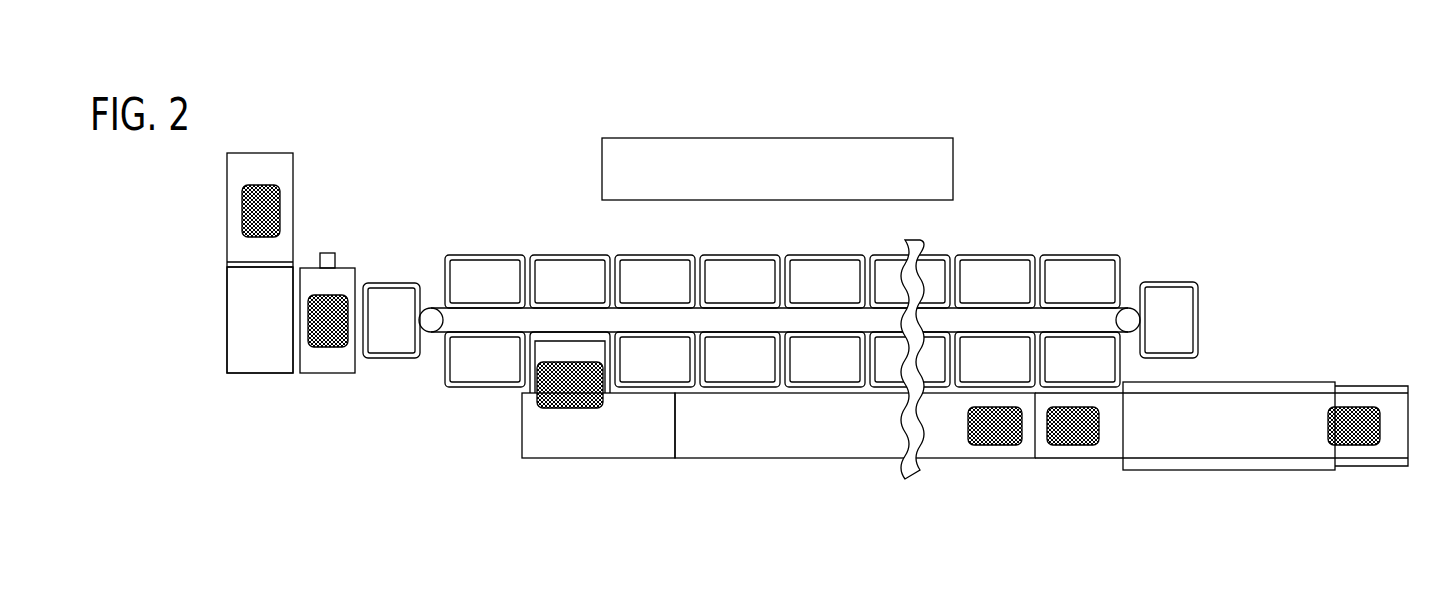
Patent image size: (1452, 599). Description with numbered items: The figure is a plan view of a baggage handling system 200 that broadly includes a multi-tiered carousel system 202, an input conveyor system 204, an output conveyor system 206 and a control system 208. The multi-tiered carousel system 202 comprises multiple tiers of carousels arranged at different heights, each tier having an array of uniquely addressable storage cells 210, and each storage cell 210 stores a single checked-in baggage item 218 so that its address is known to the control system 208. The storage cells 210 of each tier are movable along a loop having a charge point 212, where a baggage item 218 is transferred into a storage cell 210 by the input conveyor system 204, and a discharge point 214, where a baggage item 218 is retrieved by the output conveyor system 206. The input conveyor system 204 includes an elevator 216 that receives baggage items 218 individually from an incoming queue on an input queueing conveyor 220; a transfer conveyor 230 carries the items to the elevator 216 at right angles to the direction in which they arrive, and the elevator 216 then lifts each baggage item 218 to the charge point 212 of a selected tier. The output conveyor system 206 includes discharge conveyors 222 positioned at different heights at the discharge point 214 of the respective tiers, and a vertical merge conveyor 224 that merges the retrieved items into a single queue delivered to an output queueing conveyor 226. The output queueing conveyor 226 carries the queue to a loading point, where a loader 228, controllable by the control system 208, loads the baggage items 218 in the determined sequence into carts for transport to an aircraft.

The baggage handling system 200 is at (1175, 157).
The multi-tiered carousel system 202 is at (1065, 232).
The input conveyor system 204 is at (348, 265).
The output conveyor system 206 is at (695, 478).
The control system 208 is at (800, 181).
The storage cell 210 is at (1088, 272).
The charge point 212 is at (403, 278).
The discharge point 214 is at (508, 414).
The elevator 216 is at (316, 375).
The baggage item 218 is at (252, 212).
The input queueing conveyor 220 is at (263, 153).
The discharge conveyor 222 is at (620, 460).
The vertical merge conveyor 224 is at (808, 460).
The output queueing conveyor 226 is at (1103, 460).
The loader 228 is at (1247, 382).
The transfer conveyor 230 is at (252, 333).